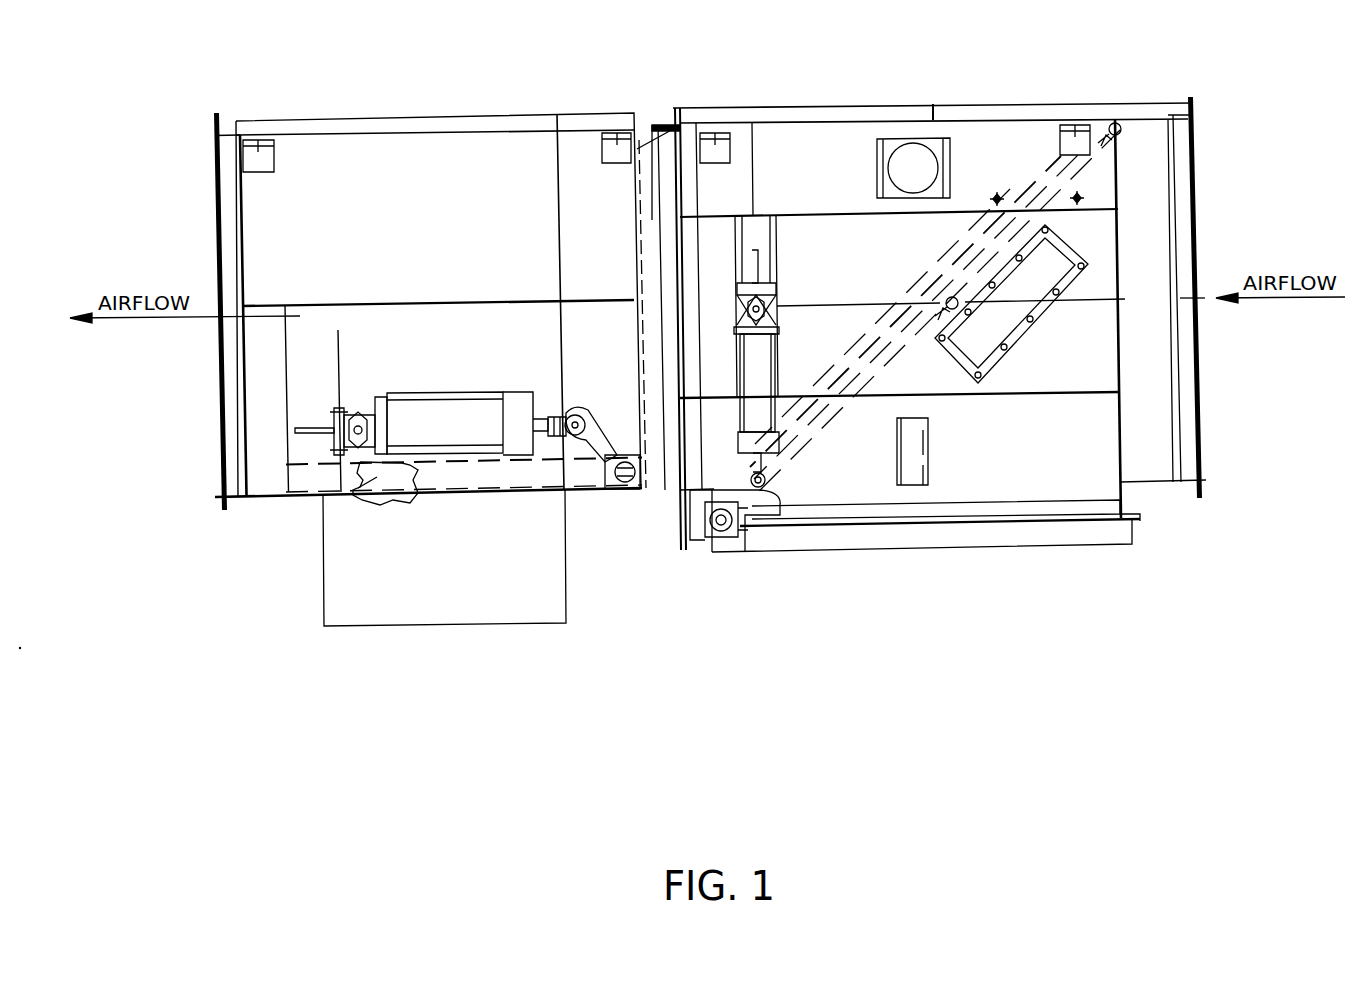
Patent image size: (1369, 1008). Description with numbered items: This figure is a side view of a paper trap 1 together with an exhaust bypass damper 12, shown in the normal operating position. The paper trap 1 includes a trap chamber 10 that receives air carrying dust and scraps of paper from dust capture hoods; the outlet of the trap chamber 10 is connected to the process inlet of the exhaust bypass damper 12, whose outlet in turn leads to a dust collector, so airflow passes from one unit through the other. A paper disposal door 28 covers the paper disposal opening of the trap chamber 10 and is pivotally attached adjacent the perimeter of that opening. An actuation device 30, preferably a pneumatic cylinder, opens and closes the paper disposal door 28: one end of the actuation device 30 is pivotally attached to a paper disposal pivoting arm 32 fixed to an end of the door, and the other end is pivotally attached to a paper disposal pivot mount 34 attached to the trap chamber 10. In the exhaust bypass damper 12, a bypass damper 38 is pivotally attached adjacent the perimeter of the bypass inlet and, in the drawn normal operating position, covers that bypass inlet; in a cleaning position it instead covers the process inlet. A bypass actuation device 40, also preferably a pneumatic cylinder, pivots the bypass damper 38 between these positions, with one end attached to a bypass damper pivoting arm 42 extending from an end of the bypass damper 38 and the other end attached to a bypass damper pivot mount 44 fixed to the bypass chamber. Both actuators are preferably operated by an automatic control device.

The paper trap 1 is at (1025, 620).
The trap chamber 10 is at (805, 110).
The exhaust bypass damper 12 is at (532, 114).
The paper disposal door 28 is at (1063, 535).
The actuation device 30 is at (758, 378).
The paper disposal pivoting arm 32 is at (740, 527).
The paper disposal pivot mount 34 is at (777, 292).
The bypass damper 38 is at (360, 485).
The bypass actuation device 40 is at (472, 428).
The bypass damper pivoting arm 42 is at (600, 447).
The bypass damper pivot mount 44 is at (328, 438).